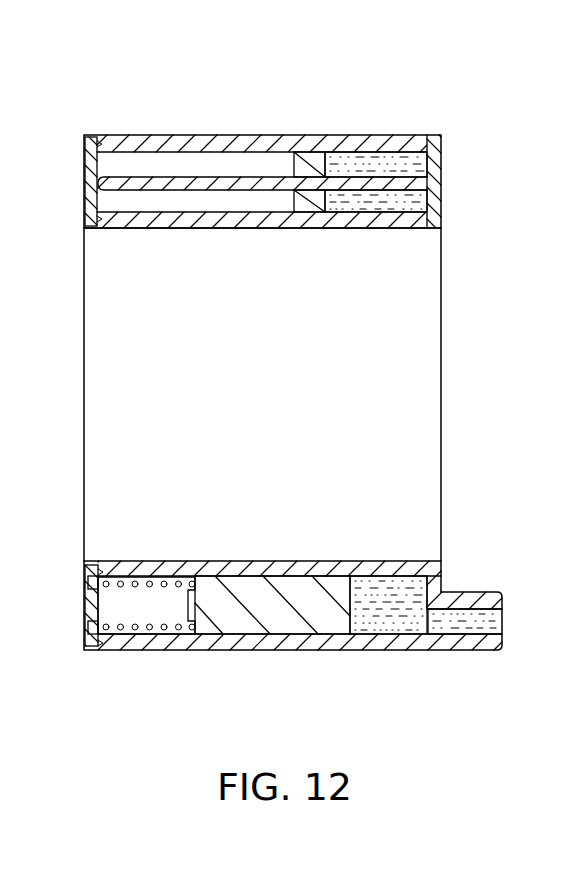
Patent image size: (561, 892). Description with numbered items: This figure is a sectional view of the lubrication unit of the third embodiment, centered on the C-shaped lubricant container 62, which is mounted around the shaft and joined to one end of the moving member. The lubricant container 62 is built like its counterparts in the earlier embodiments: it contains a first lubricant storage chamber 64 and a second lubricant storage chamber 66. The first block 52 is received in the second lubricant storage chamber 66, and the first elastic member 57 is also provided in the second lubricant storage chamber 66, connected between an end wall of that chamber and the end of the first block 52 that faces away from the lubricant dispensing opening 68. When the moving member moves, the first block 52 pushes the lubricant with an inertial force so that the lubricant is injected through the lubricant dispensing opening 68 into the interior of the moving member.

The lubricant container 62 is at (140, 126).
The first lubricant storage chamber 64 is at (372, 165).
The first elastic member 57 is at (153, 630).
The first block 52 is at (277, 608).
The second lubricant storage chamber 66 is at (386, 611).
The lubricant dispensing opening 68 is at (470, 626).